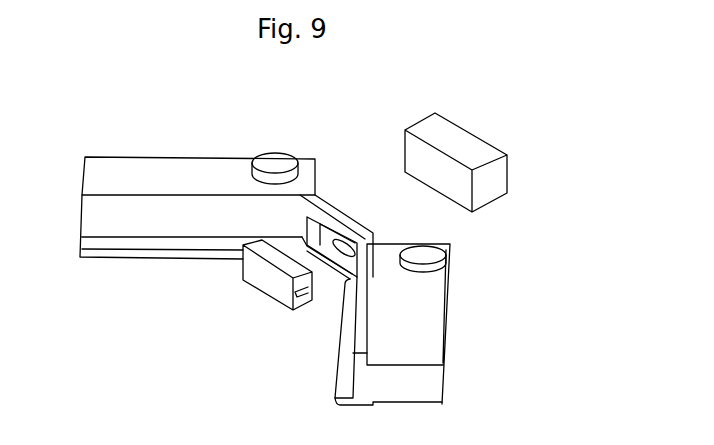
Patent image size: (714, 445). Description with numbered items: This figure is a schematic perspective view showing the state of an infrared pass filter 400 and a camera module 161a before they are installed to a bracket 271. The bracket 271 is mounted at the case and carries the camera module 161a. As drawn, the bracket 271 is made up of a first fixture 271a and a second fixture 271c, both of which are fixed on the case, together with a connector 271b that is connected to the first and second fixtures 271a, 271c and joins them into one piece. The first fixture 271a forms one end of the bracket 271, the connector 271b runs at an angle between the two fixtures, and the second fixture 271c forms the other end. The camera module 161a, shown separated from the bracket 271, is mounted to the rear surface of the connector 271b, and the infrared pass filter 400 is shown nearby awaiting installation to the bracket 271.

The bracket 271 is at (375, 127).
The first fixture 271a is at (232, 172).
The connector 271b is at (333, 217).
The second fixture 271c is at (390, 257).
The camera module 161a is at (433, 122).
The infrared pass filter 400 is at (283, 290).